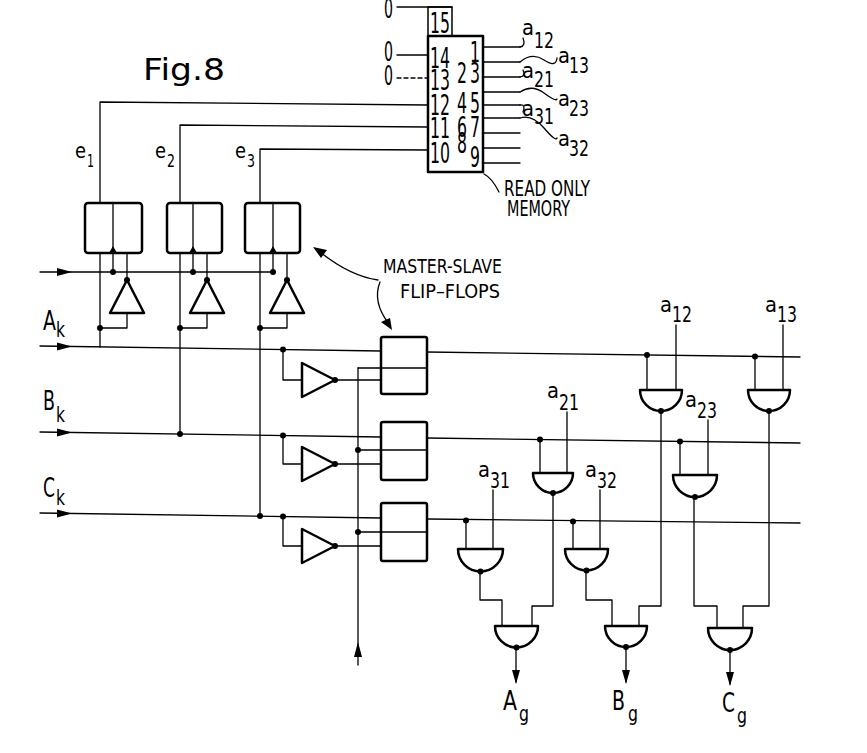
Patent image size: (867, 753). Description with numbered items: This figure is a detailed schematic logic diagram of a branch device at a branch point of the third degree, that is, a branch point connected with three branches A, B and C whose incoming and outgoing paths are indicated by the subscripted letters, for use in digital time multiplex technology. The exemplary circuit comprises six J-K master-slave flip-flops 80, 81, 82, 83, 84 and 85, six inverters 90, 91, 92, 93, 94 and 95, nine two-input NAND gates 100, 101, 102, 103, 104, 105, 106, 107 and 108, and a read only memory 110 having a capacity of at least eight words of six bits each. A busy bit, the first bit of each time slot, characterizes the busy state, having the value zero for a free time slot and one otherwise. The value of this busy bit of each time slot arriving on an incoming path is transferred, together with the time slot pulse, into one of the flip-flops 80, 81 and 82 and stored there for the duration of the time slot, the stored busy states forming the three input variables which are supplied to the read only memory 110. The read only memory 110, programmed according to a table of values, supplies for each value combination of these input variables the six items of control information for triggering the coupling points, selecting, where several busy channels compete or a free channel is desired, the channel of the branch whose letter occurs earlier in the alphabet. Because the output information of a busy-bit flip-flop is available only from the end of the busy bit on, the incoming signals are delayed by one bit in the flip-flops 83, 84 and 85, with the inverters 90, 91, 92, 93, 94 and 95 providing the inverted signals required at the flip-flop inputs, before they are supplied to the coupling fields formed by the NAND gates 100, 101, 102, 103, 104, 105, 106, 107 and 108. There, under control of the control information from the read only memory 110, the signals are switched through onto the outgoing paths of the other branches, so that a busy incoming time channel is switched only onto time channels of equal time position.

The J-K master-slave flip-flop 80 is at (133, 191).
The J-K master-slave flip-flop 81 is at (213, 191).
The J-K master-slave flip-flop 82 is at (293, 191).
The J-K master-slave flip-flop 83 is at (428, 380).
The J-K master-slave flip-flop 84 is at (428, 463).
The J-K master-slave flip-flop 85 is at (428, 546).
The inverter 90 is at (134, 301).
The inverter 91 is at (214, 301).
The inverter 92 is at (294, 301).
The inverter 93 is at (324, 386).
The inverter 94 is at (324, 470).
The inverter 95 is at (324, 552).
The NAND gate 100 is at (503, 566).
The NAND gate 101 is at (499, 645).
The NAND gate 102 is at (542, 488).
The NAND gate 103 is at (611, 566).
The NAND gate 104 is at (609, 645).
The NAND gate 105 is at (645, 408).
The NAND gate 106 is at (709, 493).
The NAND gate 107 is at (718, 645).
The NAND gate 108 is at (752, 404).
The read only memory 110 is at (455, 173).